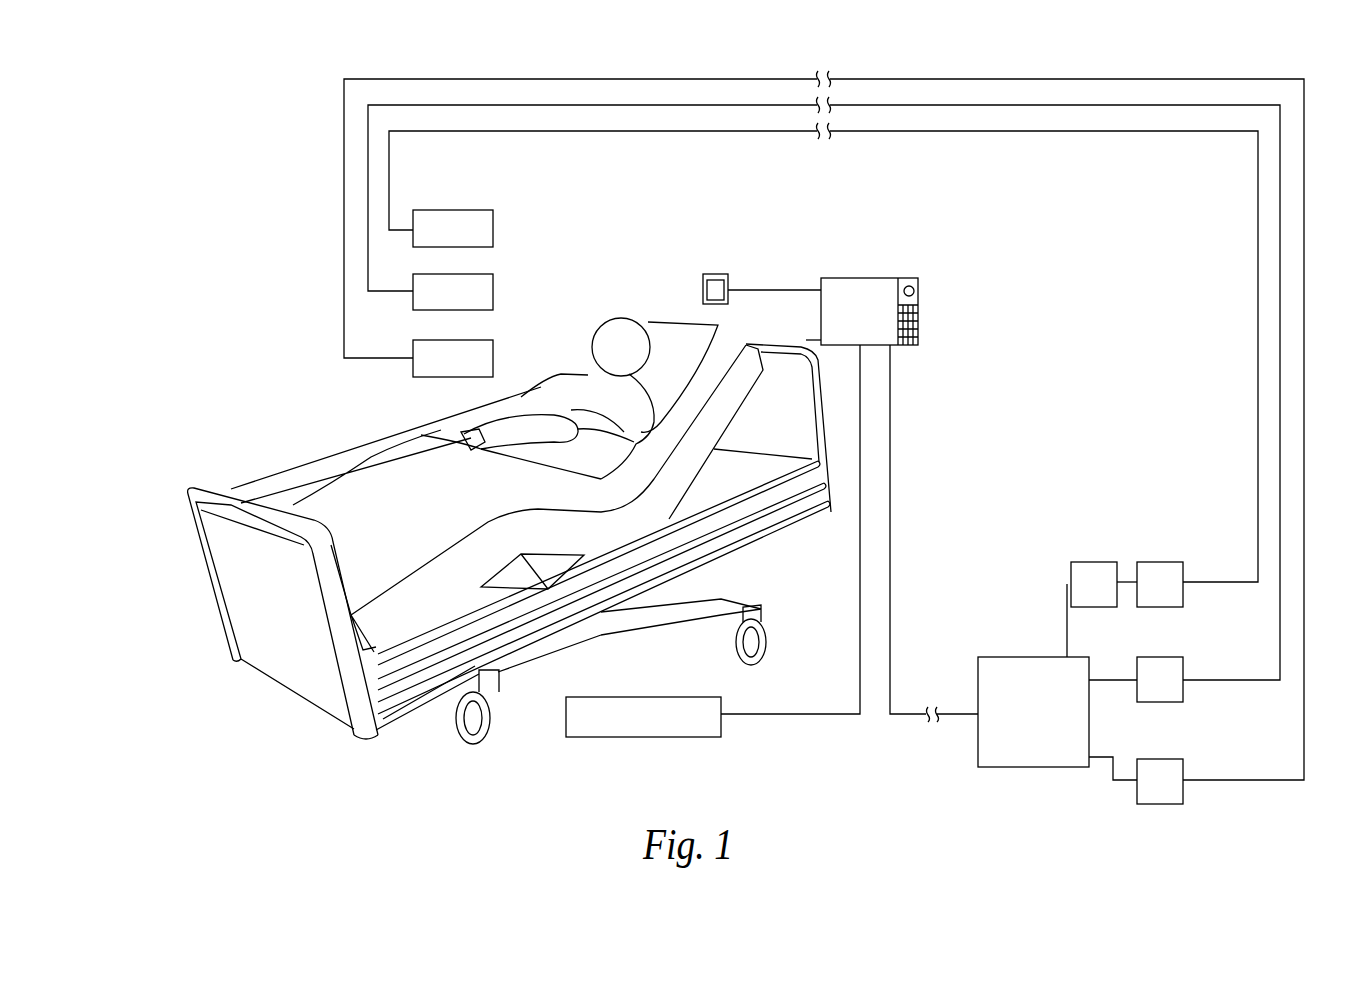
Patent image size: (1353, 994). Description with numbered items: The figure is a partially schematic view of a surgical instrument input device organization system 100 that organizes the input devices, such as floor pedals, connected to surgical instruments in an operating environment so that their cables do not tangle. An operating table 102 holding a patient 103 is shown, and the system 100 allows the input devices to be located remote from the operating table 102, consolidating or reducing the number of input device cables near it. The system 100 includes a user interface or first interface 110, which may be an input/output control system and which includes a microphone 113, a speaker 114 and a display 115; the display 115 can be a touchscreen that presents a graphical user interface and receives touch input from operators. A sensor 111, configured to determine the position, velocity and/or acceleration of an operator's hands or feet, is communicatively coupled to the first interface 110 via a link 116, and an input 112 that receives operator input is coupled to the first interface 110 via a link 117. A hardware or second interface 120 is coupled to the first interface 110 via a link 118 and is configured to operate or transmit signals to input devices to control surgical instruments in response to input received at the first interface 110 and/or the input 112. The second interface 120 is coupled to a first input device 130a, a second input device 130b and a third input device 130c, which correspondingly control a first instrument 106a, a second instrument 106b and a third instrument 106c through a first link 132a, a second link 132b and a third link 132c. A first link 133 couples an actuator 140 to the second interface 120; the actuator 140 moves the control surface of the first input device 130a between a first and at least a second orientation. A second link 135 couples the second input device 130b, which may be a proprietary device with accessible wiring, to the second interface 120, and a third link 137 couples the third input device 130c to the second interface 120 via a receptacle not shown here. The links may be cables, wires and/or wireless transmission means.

The surgical instrument input device organization system 100 is at (712, 52).
The operating table 102 is at (190, 528).
The patient 103 is at (455, 420).
The first instrument 106a is at (492, 224).
The second instrument 106b is at (492, 288).
The third instrument 106c is at (492, 355).
The first interface 110 is at (903, 286).
The sensor 111 is at (702, 285).
The input 112 is at (565, 712).
The microphone 113 is at (918, 291).
The speaker 114 is at (918, 321).
The display 115 is at (818, 337).
The link 116 is at (748, 286).
The link 117 is at (859, 580).
The link 118 is at (890, 470).
The second interface 120 is at (1005, 790).
The first input device 130a is at (1136, 565).
The second input device 130b is at (1136, 660).
The third input device 130c is at (1184, 776).
The first link 132a is at (1257, 255).
The second link 132b is at (1279, 290).
The third link 132c is at (1303, 345).
The first link 133 is at (1066, 600).
The second link 135 is at (1110, 680).
The third link 137 is at (1105, 758).
The actuator 140 is at (1070, 570).